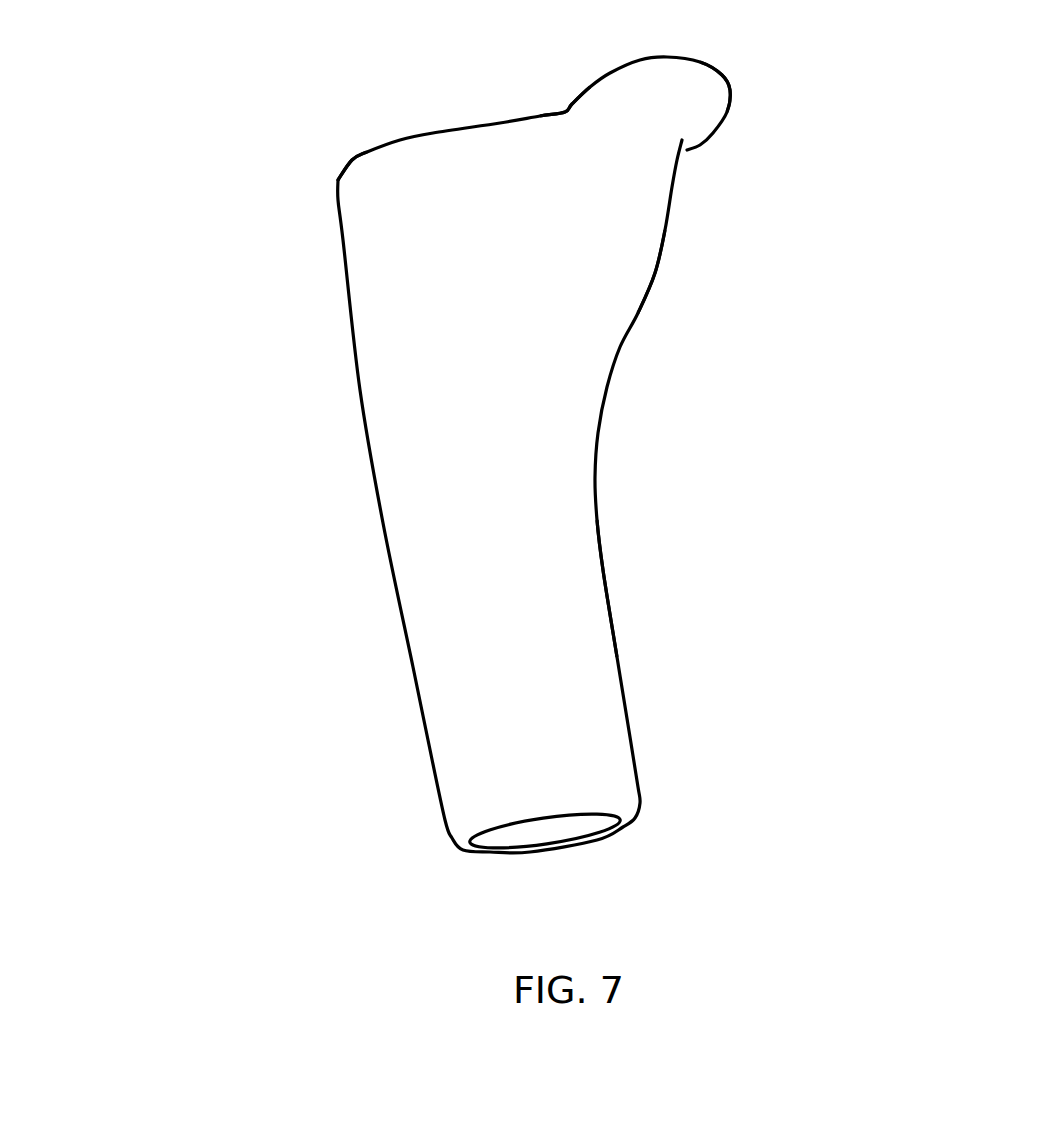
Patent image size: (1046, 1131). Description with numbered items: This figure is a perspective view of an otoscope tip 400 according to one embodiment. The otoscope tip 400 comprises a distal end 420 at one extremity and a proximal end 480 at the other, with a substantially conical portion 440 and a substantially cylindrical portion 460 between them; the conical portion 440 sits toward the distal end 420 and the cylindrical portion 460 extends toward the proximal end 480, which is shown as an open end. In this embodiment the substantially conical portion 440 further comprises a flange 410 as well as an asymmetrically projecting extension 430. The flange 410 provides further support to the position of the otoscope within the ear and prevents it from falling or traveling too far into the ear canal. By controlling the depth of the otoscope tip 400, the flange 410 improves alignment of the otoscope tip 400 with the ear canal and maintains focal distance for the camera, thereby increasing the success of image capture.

The otoscope tip 400 is at (290, 475).
The flange 410 is at (742, 85).
The distal end 420 is at (315, 185).
The asymmetrically projecting extension 430 is at (552, 102).
The substantially conical portion 440 is at (670, 277).
The substantially cylindrical portion 460 is at (638, 610).
The proximal end 480 is at (428, 847).